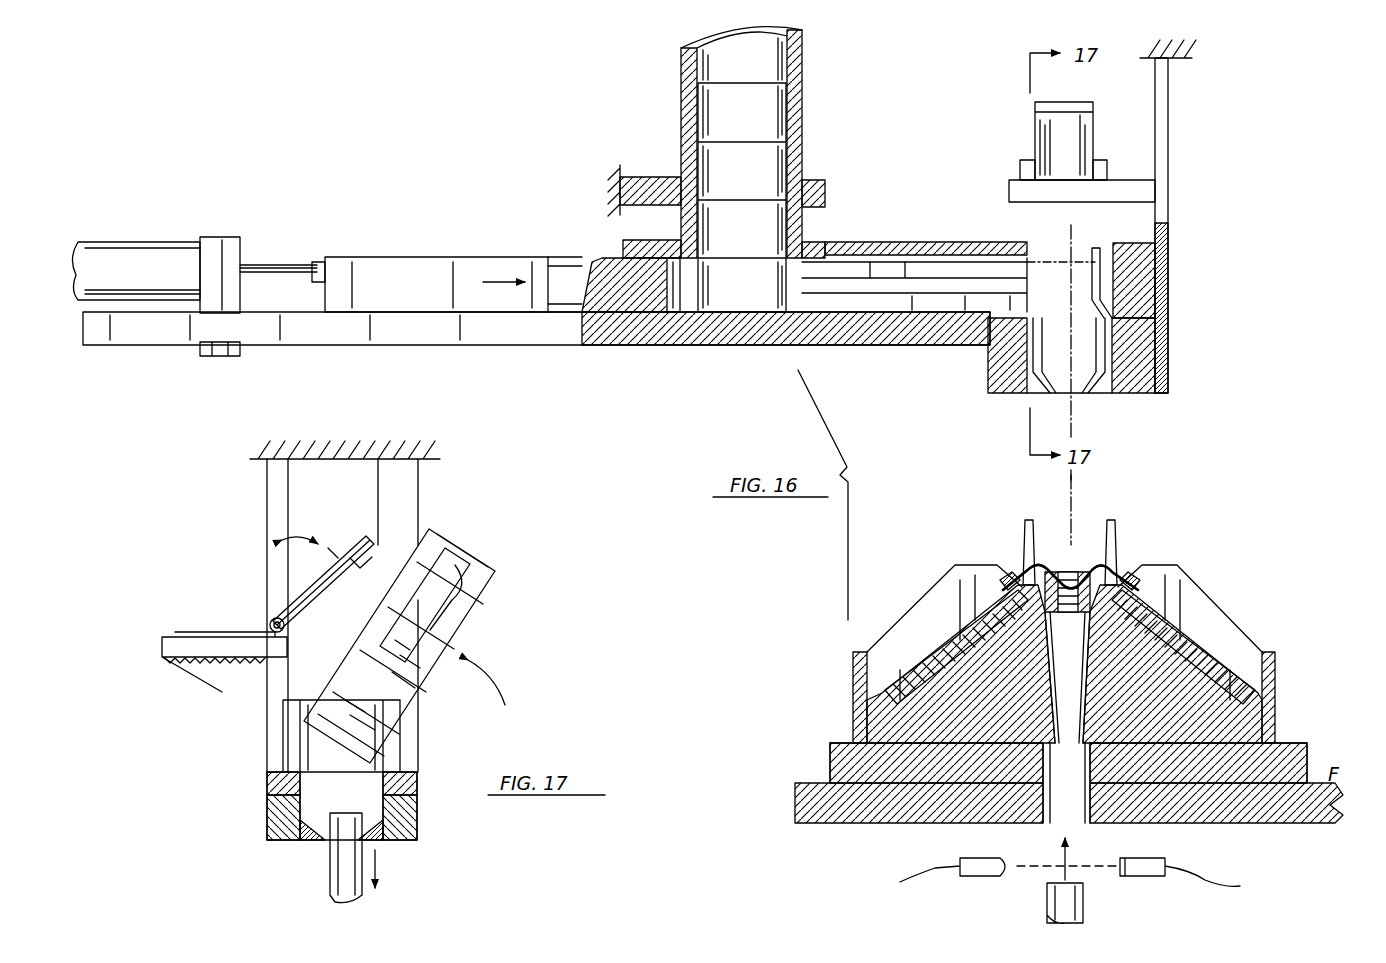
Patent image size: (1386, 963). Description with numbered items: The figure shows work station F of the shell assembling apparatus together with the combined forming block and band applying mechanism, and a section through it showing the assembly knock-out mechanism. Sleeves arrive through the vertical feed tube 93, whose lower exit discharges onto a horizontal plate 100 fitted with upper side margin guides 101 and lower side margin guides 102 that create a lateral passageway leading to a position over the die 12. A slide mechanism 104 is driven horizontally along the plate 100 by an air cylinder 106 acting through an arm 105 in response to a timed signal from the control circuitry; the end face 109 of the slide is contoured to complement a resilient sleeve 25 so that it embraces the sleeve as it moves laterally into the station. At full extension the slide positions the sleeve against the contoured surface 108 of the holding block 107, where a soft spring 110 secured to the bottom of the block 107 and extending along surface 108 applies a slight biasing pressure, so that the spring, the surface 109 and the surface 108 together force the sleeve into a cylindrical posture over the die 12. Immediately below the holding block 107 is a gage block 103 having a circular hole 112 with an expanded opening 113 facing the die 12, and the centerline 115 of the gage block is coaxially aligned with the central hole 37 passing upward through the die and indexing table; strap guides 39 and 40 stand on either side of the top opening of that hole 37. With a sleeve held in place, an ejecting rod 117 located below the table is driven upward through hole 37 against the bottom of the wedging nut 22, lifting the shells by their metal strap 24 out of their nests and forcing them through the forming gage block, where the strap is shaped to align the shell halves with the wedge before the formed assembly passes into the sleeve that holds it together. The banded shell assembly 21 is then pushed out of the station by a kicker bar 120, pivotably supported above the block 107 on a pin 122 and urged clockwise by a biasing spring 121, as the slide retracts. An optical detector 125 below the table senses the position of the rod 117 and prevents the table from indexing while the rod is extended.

In FIG. 16, the die 12 is at (1292, 716).
In FIG. 17, the shell assembly 21 is at (470, 638).
In FIG. 16, the wedging nut 22 is at (1028, 571).
In FIG. 16, the metal strap 24 is at (1108, 566).
In FIG. 16, the resilient sleeve 25 is at (730, 110).
In FIG. 16, the hole 37 is at (1075, 825).
In FIG. 16, the strap guide 39 is at (1024, 538).
In FIG. 16, the strap guide 40 is at (1113, 538).
In FIG. 16, the vertical feed tube 93 is at (685, 155).
In FIG. 16, the horizontal plate 100 is at (527, 330).
In FIG. 16, the upper side margin guide 101 is at (820, 262).
In FIG. 16, the lower side margin guide 102 is at (905, 305).
In FIG. 16, the gage block 103 is at (1130, 365).
In FIG. 16, the slide mechanism 104 is at (465, 268).
In FIG. 16, the arm 105 is at (285, 270).
In FIG. 16, the air cylinder 106 is at (165, 258).
In FIG. 16, the holding block 107 is at (1145, 298).
In FIG. 16, the contoured surface 108 is at (1097, 255).
In FIG. 16, the end face 109 is at (675, 312).
In FIG. 16, the soft spring 110 is at (1160, 252).
In FIG. 16, the circular hole 112 is at (1020, 350).
In FIG. 16, the expanded opening 113 is at (1048, 385).
In FIG. 16, the centerline 115 is at (1074, 483).
In FIG. 16, the ejecting rod 117 is at (1045, 893).
In FIG. 17, the ejecting rod 117 is at (340, 870).
In FIG. 17, the kicker bar 120 is at (366, 550).
In FIG. 17, the biasing spring 121 is at (333, 550).
In FIG. 17, the pin 122 is at (270, 620).
In FIG. 16, the optical detector 125 is at (1148, 875).